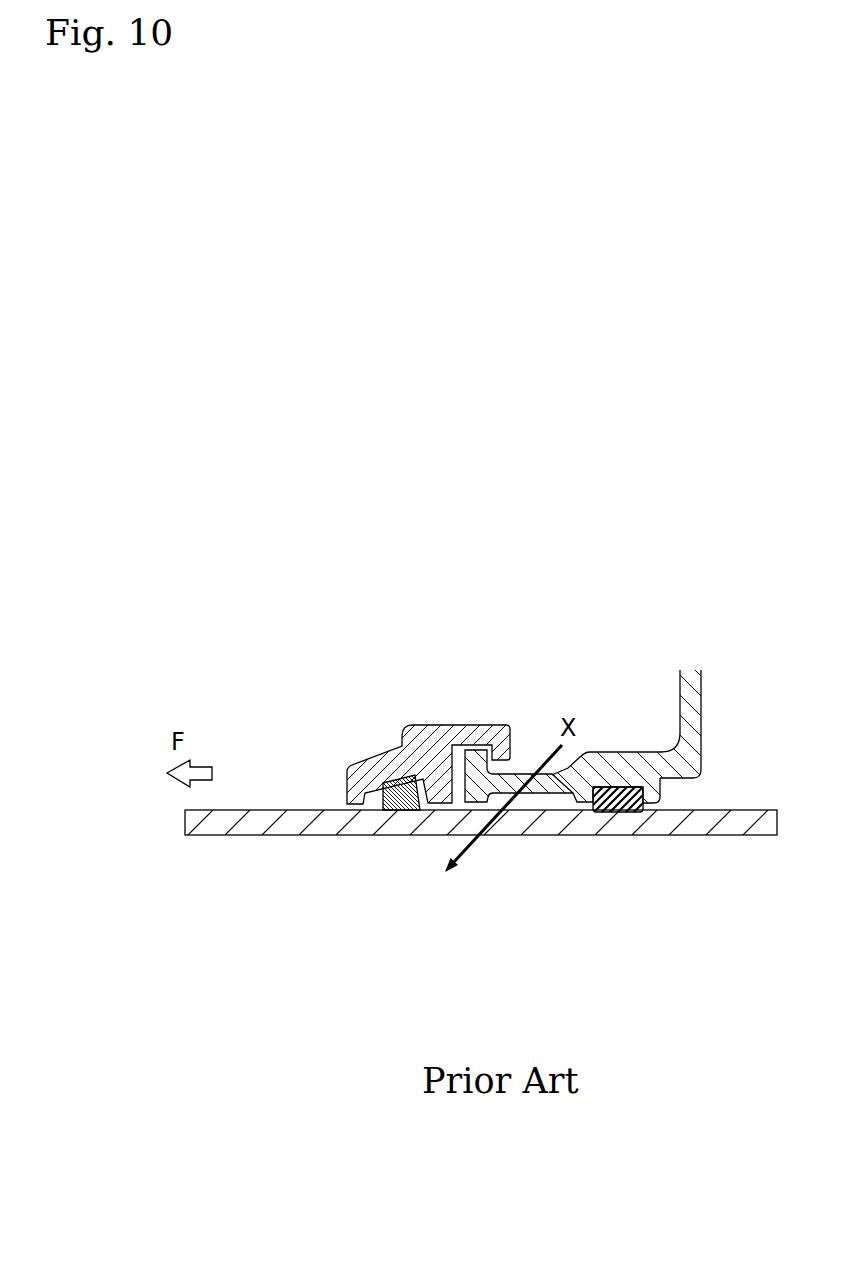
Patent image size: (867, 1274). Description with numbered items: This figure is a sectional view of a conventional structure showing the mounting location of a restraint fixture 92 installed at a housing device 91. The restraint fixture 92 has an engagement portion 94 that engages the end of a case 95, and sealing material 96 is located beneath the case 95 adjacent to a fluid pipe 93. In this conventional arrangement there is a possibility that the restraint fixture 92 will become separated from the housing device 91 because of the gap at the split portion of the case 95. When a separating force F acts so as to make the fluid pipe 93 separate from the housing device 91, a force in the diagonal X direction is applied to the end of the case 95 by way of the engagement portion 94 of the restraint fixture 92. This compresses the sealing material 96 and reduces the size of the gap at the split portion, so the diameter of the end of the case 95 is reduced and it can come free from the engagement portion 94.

The housing device 91 is at (662, 701).
The restraint fixture 92 is at (350, 755).
The fluid pipe 93 is at (258, 810).
The engagement portion 94 is at (516, 752).
The case 95 is at (617, 752).
The sealing material 96 is at (603, 815).